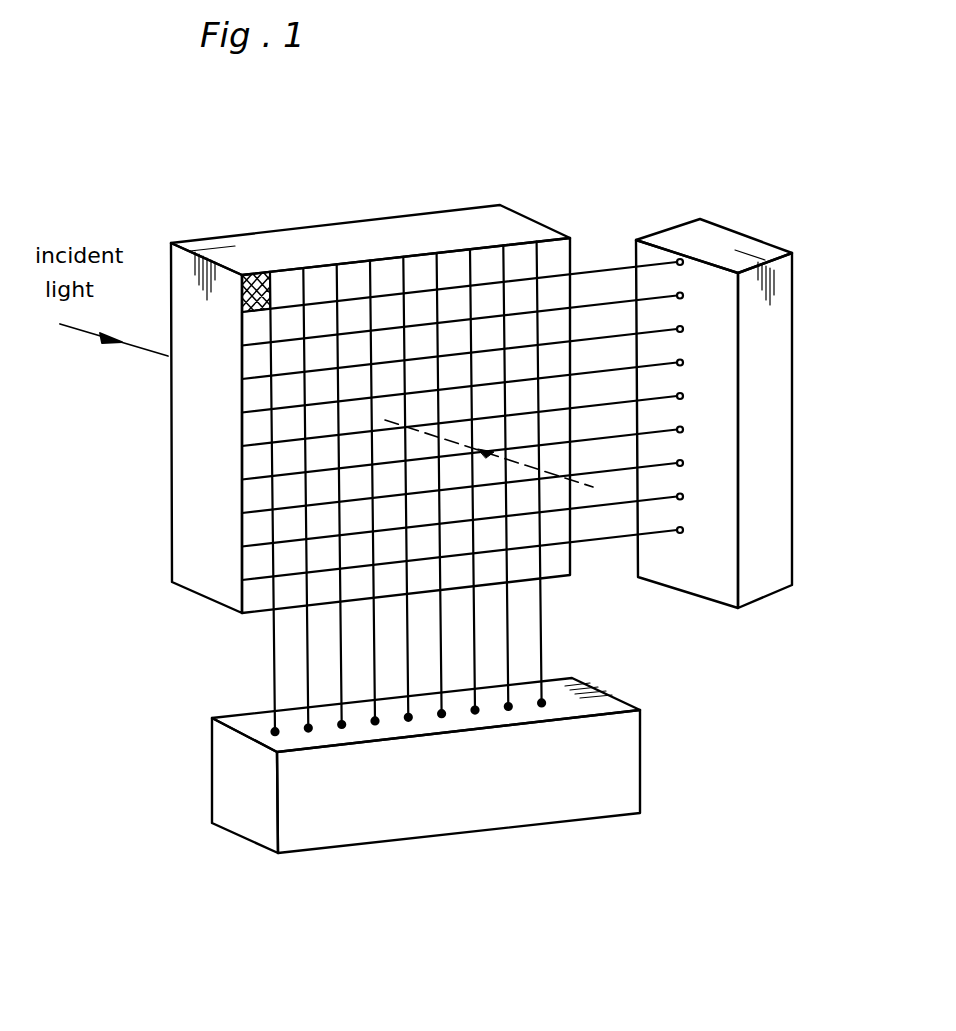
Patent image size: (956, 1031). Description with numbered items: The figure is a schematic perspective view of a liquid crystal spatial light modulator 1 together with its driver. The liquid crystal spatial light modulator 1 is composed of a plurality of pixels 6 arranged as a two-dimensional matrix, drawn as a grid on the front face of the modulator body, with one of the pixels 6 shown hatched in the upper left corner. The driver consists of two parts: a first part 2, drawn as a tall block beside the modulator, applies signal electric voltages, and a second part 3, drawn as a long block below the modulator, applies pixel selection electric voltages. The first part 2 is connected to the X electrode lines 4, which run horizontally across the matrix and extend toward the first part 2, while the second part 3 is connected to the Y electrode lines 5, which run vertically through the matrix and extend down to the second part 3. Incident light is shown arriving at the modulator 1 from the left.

The liquid crystal spatial light modulator 1 is at (363, 202).
The first part 2 is at (772, 348).
The second part 3 is at (412, 823).
The X electrode lines 4 is at (588, 267).
The Y electrode lines 5 is at (273, 642).
The pixels 6 is at (262, 278).